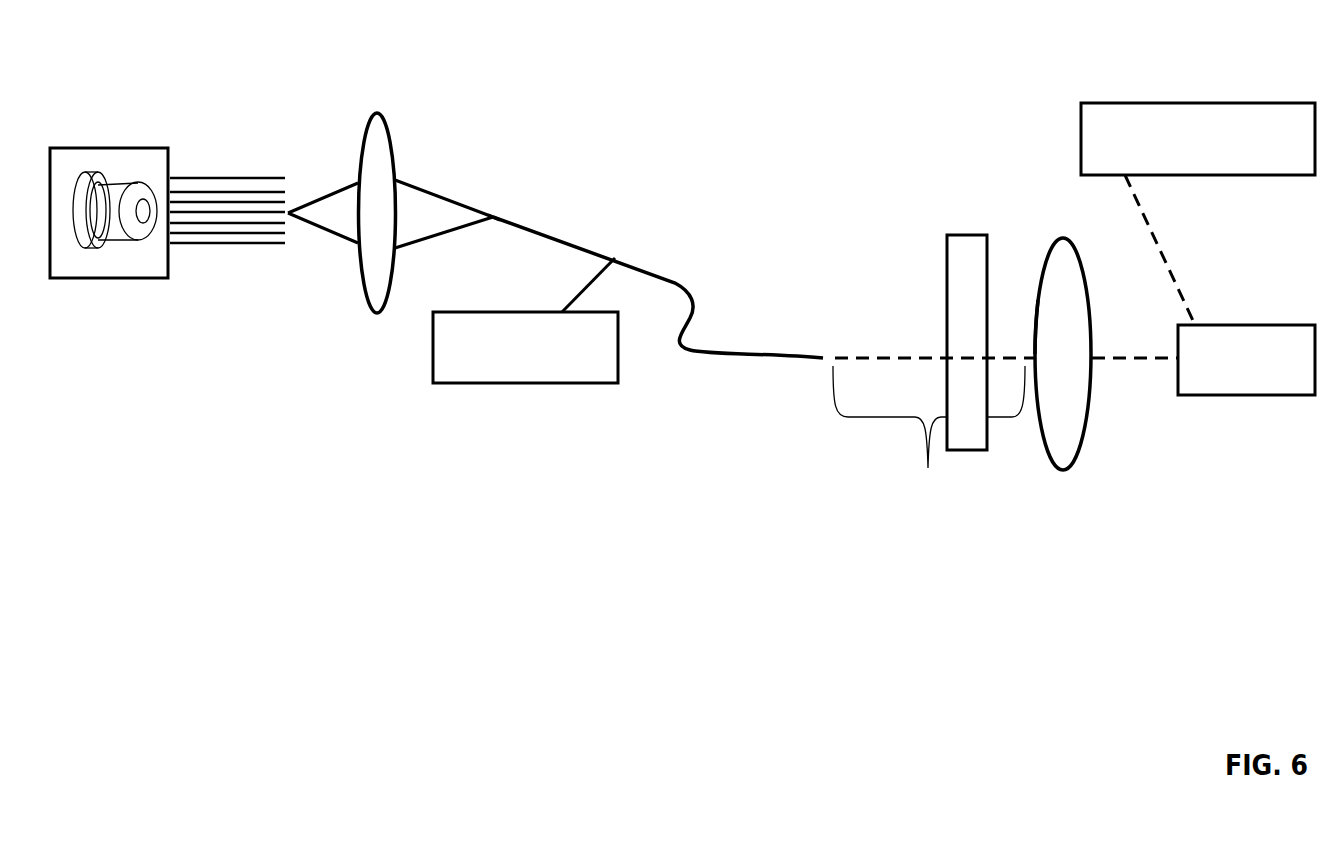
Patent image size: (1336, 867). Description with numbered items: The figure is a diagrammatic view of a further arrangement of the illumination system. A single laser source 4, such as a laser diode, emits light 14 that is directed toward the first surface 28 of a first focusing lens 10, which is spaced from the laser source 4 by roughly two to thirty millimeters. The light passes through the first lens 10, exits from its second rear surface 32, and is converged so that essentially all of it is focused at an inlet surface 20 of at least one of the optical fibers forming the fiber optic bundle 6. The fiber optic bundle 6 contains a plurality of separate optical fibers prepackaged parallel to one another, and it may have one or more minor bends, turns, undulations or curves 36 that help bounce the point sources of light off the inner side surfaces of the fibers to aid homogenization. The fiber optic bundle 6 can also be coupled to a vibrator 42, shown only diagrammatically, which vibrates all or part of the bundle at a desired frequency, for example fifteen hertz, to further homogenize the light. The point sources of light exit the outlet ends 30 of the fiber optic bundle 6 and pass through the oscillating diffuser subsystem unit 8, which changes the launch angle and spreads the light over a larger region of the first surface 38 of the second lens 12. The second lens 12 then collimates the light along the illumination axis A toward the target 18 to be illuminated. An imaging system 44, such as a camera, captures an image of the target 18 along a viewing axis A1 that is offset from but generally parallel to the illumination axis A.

The laser source 4 is at (92, 148).
The laser beam 14 is at (250, 177).
The first surface 28 is at (363, 137).
The first lens 10 is at (377, 113).
The second rear surface 32 is at (392, 135).
The inlet surface 20 is at (477, 207).
The fiber optic bundle 6 is at (588, 242).
The vibrator 42 is at (487, 385).
The curve 36 is at (751, 138).
The outlet ends 30 is at (822, 357).
The oscillating diffuser subsystem unit 8 is at (955, 232).
The second lens 12 is at (1077, 460).
The first surface 38 is at (1038, 263).
The illumination axis A is at (1147, 365).
The viewing axis A1 is at (1167, 267).
The imaging system 44 is at (1120, 105).
The target 18 is at (1230, 392).